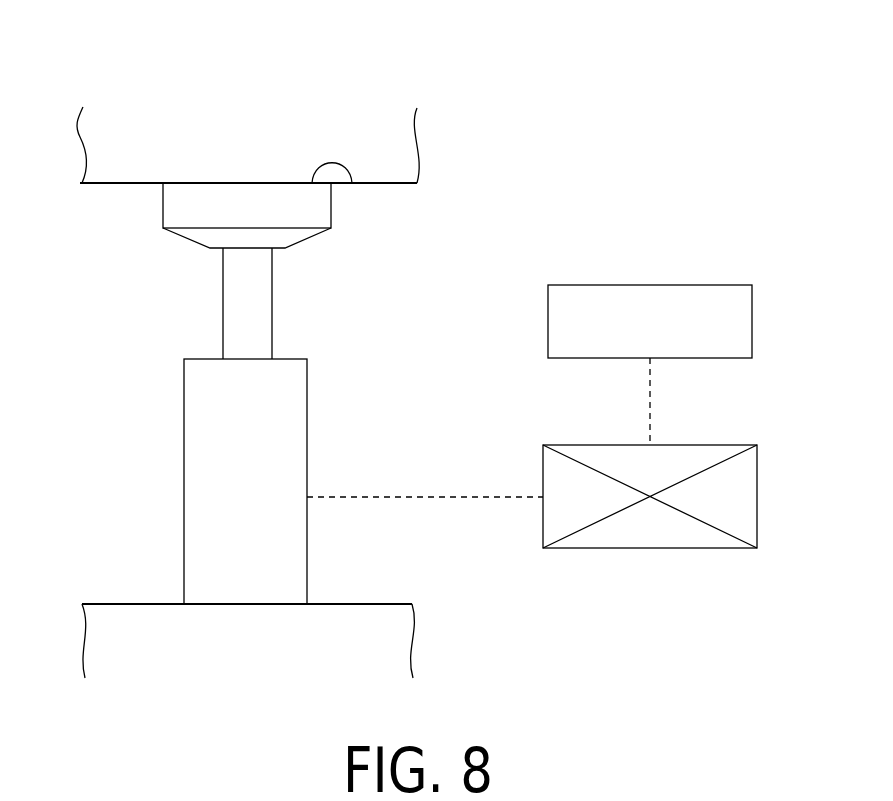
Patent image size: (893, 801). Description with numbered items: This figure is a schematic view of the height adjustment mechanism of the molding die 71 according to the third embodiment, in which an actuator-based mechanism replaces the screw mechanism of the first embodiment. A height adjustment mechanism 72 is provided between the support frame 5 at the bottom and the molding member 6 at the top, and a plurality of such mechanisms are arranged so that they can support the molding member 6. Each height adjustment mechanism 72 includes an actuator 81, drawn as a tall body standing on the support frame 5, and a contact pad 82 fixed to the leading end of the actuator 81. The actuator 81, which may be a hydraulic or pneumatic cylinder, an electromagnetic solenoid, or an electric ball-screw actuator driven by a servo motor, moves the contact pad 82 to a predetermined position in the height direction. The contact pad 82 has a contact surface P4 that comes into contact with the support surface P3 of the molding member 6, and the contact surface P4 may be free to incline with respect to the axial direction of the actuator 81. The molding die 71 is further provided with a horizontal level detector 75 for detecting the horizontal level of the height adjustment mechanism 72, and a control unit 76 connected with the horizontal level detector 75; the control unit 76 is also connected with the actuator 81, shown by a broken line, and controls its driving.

The support frame 5 is at (82, 655).
The molding member 6 is at (76, 132).
The molding die 71 is at (347, 68).
The height adjustment mechanism 72 is at (223, 393).
The horizontal level detector 75 is at (710, 285).
The control unit 76 is at (710, 445).
The actuator 81 is at (307, 427).
The contact pad 82 is at (308, 240).
The support surface P3 is at (108, 184).
The contact surface P4 is at (352, 183).